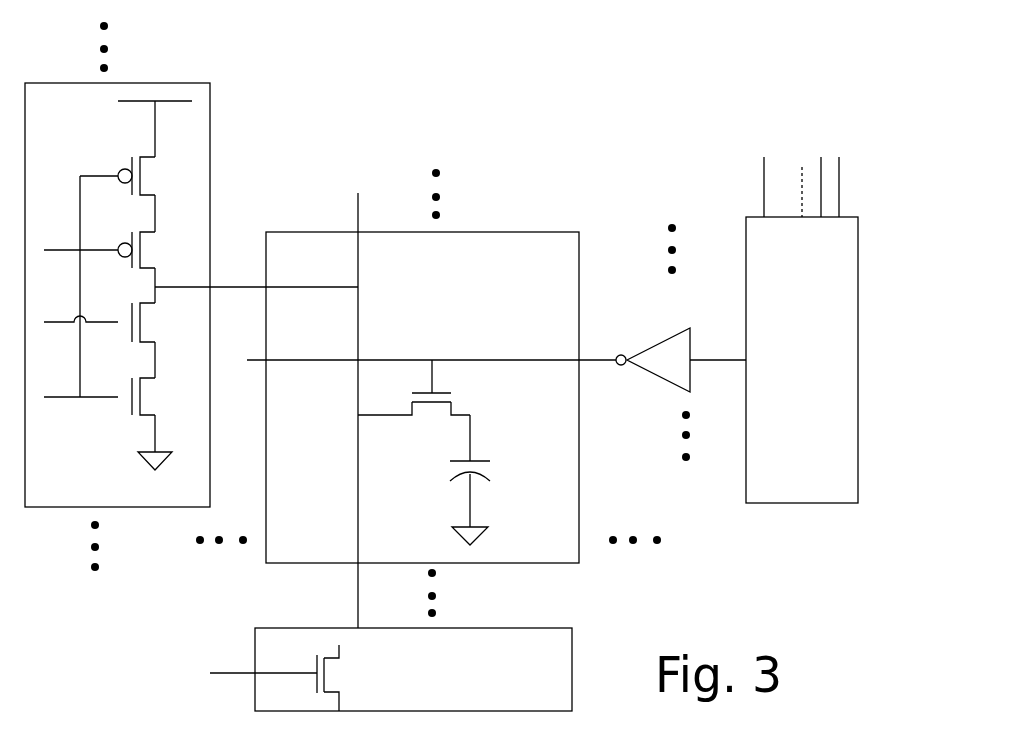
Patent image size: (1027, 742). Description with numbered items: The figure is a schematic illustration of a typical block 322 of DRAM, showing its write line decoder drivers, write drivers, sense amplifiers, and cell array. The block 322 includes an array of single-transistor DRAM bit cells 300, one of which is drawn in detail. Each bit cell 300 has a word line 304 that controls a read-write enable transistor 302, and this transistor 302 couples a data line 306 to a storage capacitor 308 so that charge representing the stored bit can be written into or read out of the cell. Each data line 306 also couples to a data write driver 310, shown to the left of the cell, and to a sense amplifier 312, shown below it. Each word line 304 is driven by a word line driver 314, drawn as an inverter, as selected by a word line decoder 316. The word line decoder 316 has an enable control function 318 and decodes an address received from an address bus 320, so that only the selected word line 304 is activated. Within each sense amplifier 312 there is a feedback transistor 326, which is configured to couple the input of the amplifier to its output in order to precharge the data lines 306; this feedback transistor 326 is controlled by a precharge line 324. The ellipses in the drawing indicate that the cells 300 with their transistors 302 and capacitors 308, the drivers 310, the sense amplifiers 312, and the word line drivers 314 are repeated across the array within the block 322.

The single-transistor DRAM bit cell 300 is at (563, 547).
The read-write enable transistor 302 is at (451, 392).
The word line 304 is at (375, 360).
The data line 306 is at (358, 543).
The storage capacitor 308 is at (477, 468).
The data write driver 310 is at (110, 501).
The sense amplifier 312 is at (537, 704).
The word line driver 314 is at (653, 360).
The word line decoder 316 is at (820, 501).
The enable control function 318 is at (764, 165).
The address bus 320 is at (821, 165).
The block 322 is at (858, 80).
The precharge line 324 is at (230, 673).
The feedback transistor 326 is at (331, 645).